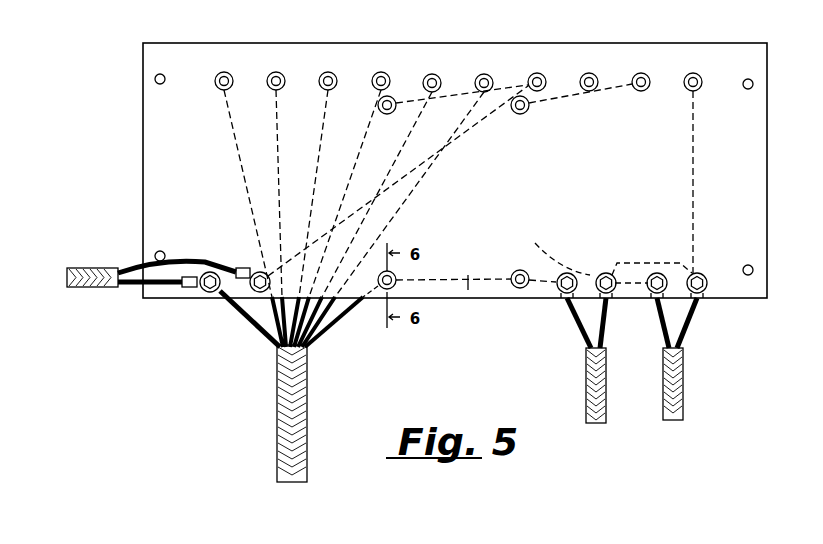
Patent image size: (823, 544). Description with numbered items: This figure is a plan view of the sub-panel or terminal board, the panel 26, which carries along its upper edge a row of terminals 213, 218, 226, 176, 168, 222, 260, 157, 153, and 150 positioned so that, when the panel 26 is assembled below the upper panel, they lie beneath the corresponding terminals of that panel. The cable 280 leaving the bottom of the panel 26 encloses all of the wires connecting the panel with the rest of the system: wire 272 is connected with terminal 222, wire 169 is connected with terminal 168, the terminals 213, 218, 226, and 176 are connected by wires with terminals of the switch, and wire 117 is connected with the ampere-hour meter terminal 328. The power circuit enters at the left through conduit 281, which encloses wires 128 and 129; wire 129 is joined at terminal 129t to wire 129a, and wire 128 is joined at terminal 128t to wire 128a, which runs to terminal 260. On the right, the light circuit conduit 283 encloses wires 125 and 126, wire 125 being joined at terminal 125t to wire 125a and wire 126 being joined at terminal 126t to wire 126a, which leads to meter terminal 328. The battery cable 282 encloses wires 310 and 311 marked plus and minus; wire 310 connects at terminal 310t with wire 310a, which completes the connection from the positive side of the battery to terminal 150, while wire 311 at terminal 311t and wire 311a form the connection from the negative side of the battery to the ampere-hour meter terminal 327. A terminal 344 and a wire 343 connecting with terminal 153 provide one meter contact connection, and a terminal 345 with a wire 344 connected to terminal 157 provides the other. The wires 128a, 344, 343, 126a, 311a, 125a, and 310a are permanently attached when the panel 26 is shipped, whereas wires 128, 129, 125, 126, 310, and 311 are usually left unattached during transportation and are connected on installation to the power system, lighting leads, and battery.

The panel 26 is at (143, 155).
The wire 117 is at (339, 311).
The light circuit wire 125 is at (605, 330).
The wire 125a is at (672, 240).
The terminal 125t is at (612, 297).
The light circuit wire 126 is at (580, 328).
The wire 126a is at (468, 290).
The terminal 126t is at (560, 292).
The wire 128 is at (130, 268).
The wire 128a is at (460, 135).
The terminal 128t is at (254, 273).
The wire 129 is at (130, 287).
The wire 129a is at (248, 320).
The terminal 129t is at (203, 290).
The terminal 150 is at (695, 73).
The terminal 153 is at (641, 73).
The terminal 157 is at (590, 73).
The terminal 168 is at (432, 74).
The wire 169 is at (399, 152).
The terminal 176 is at (380, 72).
The terminal 213 is at (219, 74).
The terminal 218 is at (275, 72).
The terminal 222 is at (483, 74).
The terminal 226 is at (327, 72).
The terminal 260 is at (540, 73).
The wire 272 is at (403, 198).
The cable 280 is at (309, 406).
The conduit 281 is at (77, 288).
The cable 282 is at (683, 388).
The conduit 283 is at (586, 388).
The wire 310 is at (686, 333).
The wire 310a is at (694, 150).
The terminal 310t is at (704, 274).
The wire 311 is at (665, 343).
The wire 311a is at (535, 243).
The terminal 311t is at (668, 287).
The ampere-hour meter terminal 327 is at (516, 272).
The ampere-hour meter terminal 328 is at (397, 276).
The wire 343 is at (575, 96).
The terminal 344 is at (451, 102).
The terminal 345 is at (395, 99).